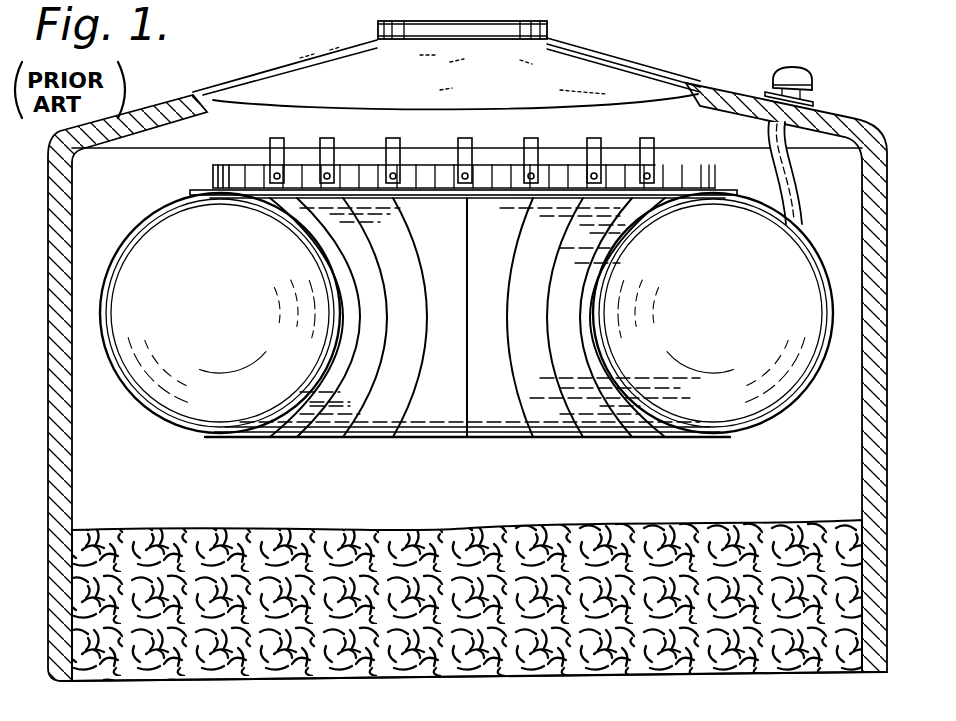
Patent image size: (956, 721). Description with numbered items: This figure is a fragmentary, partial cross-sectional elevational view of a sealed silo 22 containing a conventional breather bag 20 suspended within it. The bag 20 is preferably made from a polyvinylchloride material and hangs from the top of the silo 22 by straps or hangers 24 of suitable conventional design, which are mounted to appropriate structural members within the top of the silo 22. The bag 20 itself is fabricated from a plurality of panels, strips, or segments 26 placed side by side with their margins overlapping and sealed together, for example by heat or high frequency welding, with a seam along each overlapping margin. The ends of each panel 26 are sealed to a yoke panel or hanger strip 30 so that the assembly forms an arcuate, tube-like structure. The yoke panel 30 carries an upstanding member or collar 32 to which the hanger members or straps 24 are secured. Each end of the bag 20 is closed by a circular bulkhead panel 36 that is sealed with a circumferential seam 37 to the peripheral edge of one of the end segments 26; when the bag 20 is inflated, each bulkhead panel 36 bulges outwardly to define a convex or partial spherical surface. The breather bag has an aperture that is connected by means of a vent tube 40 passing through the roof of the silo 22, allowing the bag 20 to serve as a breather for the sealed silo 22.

The breather bag 20 is at (396, 440).
The silo 22 is at (640, 60).
The straps or hangers 24 is at (392, 137).
The panels 26 is at (598, 412).
The yoke panel 30 is at (214, 181).
The collar 32 is at (233, 185).
The bulkhead panel 36 is at (221, 412).
The circumferential seam 37 is at (292, 219).
The vent tube 40 is at (789, 179).